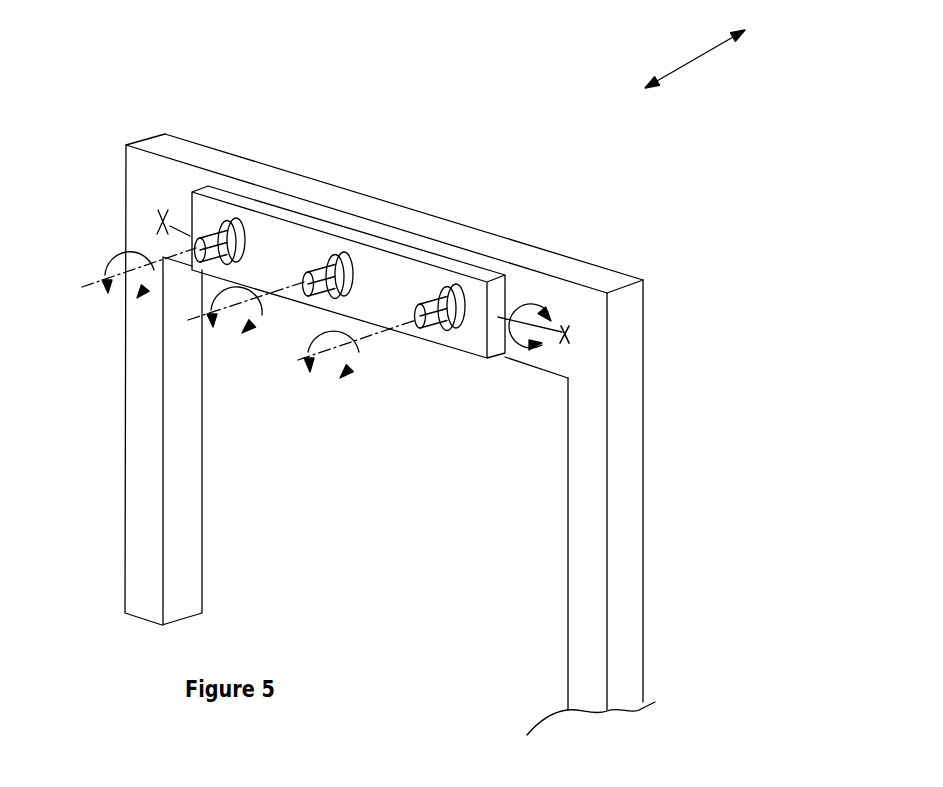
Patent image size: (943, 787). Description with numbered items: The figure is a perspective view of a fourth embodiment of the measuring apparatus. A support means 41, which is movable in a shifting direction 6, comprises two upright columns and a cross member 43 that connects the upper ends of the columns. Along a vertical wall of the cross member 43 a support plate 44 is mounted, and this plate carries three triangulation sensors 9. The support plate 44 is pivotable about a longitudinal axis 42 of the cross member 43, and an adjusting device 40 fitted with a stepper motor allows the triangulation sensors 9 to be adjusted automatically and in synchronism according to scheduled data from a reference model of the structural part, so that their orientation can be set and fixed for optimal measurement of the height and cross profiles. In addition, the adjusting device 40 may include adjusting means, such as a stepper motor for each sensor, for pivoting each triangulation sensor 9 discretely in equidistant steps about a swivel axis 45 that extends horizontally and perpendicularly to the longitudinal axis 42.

The shifting direction 6 is at (698, 58).
The triangulation sensors 9 is at (218, 226).
The adjusting device 40 is at (313, 155).
The support means 41 is at (582, 607).
The longitudinal axis 42 is at (562, 333).
The cross member 43 is at (550, 255).
The support plate 44 is at (313, 204).
The swivel axis 45 is at (323, 350).